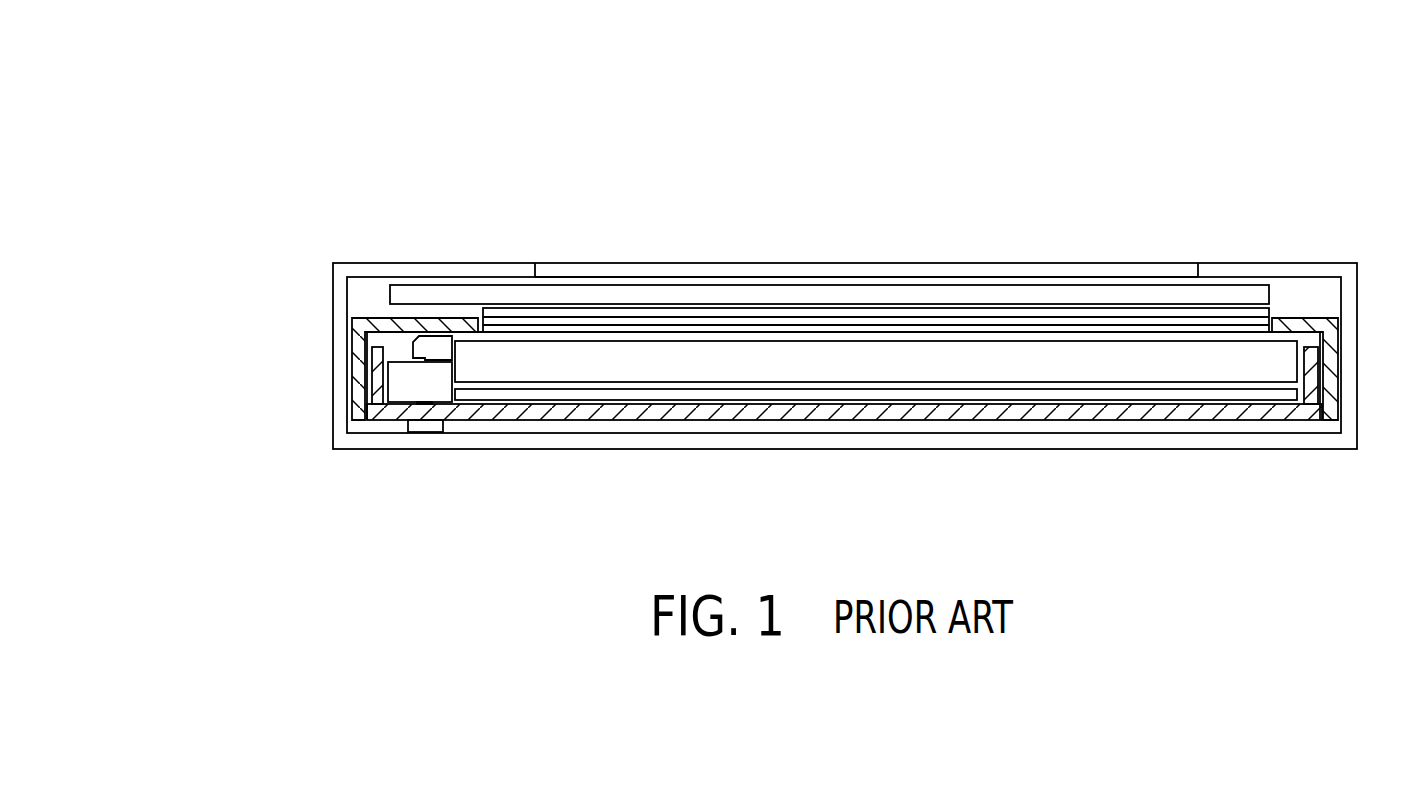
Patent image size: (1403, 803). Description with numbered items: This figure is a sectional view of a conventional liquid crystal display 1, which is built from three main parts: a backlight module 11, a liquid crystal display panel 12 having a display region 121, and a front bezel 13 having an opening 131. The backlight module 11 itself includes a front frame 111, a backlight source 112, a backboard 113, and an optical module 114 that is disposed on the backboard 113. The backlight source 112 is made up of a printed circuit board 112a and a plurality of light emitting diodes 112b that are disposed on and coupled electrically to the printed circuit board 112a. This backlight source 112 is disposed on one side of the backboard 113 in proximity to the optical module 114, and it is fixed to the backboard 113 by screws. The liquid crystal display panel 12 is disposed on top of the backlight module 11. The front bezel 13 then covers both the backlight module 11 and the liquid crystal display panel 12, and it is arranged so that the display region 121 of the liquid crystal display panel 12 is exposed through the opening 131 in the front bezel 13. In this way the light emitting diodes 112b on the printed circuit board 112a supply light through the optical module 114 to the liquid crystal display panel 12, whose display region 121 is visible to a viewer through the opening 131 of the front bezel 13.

The liquid crystal display 1 is at (1077, 175).
The backlight module 11 is at (173, 245).
The front frame 111 is at (383, 327).
The backlight source 112 is at (242, 368).
The printed circuit board 112a is at (403, 382).
The light emitting diodes 112b is at (413, 351).
The backboard 113 is at (403, 412).
The optical module 114 is at (473, 350).
The liquid crystal display panel 12 is at (983, 284).
The display region 121 is at (828, 285).
The front bezel 13 is at (1266, 263).
The opening 131 is at (1150, 272).